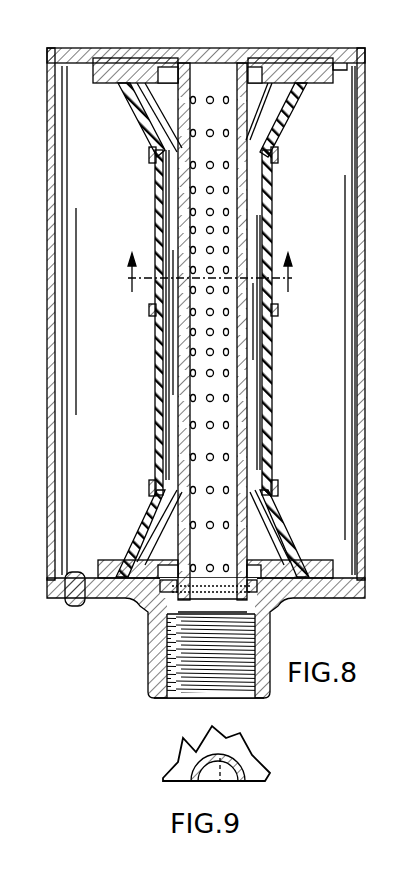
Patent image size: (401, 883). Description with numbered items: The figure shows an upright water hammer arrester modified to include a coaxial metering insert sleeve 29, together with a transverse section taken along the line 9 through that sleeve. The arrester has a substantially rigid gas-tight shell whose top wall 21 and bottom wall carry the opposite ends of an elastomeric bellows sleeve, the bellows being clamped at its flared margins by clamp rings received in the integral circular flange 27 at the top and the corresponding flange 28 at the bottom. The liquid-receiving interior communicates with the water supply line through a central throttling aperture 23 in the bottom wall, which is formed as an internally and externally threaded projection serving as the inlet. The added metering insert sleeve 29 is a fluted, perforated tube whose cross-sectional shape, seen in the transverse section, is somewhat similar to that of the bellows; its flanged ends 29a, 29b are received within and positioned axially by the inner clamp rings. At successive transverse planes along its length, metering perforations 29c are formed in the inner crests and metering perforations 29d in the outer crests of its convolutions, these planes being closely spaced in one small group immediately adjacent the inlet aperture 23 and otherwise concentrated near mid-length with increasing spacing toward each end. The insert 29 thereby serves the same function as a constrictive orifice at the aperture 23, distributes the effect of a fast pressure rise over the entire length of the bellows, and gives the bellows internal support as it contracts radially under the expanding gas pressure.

In FIG. 8, the top wall 21 is at (140, 50).
In FIG. 8, the throttling aperture 23 is at (213, 603).
In FIG. 8, the circular flange 27 is at (337, 572).
In FIG. 8, the flange 28 is at (335, 72).
In FIG. 8, the metering insert sleeve 29 is at (213, 84).
In FIG. 8, the flanged end 29a is at (252, 78).
In FIG. 8, the flanged end 29b is at (253, 568).
In FIG. 8, the metering perforations 29c is at (228, 134).
In FIG. 9, the metering perforations 29c is at (230, 783).
In FIG. 9, the metering perforations 29d is at (252, 738).
In FIG. 8, the section line 9 is at (211, 261).